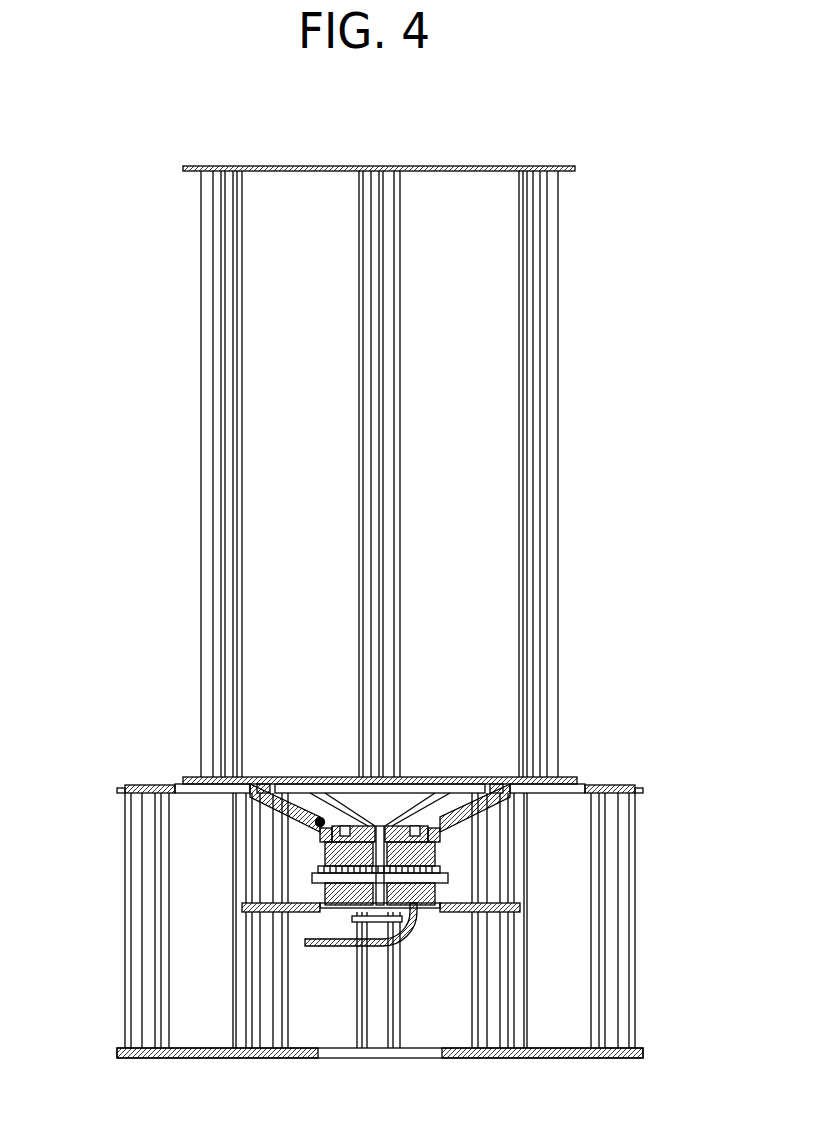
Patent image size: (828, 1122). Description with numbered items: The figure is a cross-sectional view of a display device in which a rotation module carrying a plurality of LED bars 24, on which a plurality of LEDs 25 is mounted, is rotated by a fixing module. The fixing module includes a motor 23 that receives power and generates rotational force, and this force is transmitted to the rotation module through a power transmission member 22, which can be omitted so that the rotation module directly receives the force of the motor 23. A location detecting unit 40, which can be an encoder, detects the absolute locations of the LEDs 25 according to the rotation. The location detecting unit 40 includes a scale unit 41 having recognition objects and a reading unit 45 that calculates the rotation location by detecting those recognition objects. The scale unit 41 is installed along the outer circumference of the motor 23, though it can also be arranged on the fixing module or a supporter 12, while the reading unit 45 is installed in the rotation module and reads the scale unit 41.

The supporter 12 is at (490, 902).
The power transmission member 22 is at (480, 807).
The motor 23 is at (435, 847).
The LED bars 24 is at (200, 213).
The LEDs 25 is at (385, 440).
The location detecting unit 40 is at (250, 848).
The scale unit 41 is at (312, 878).
The reading unit 45 is at (316, 823).